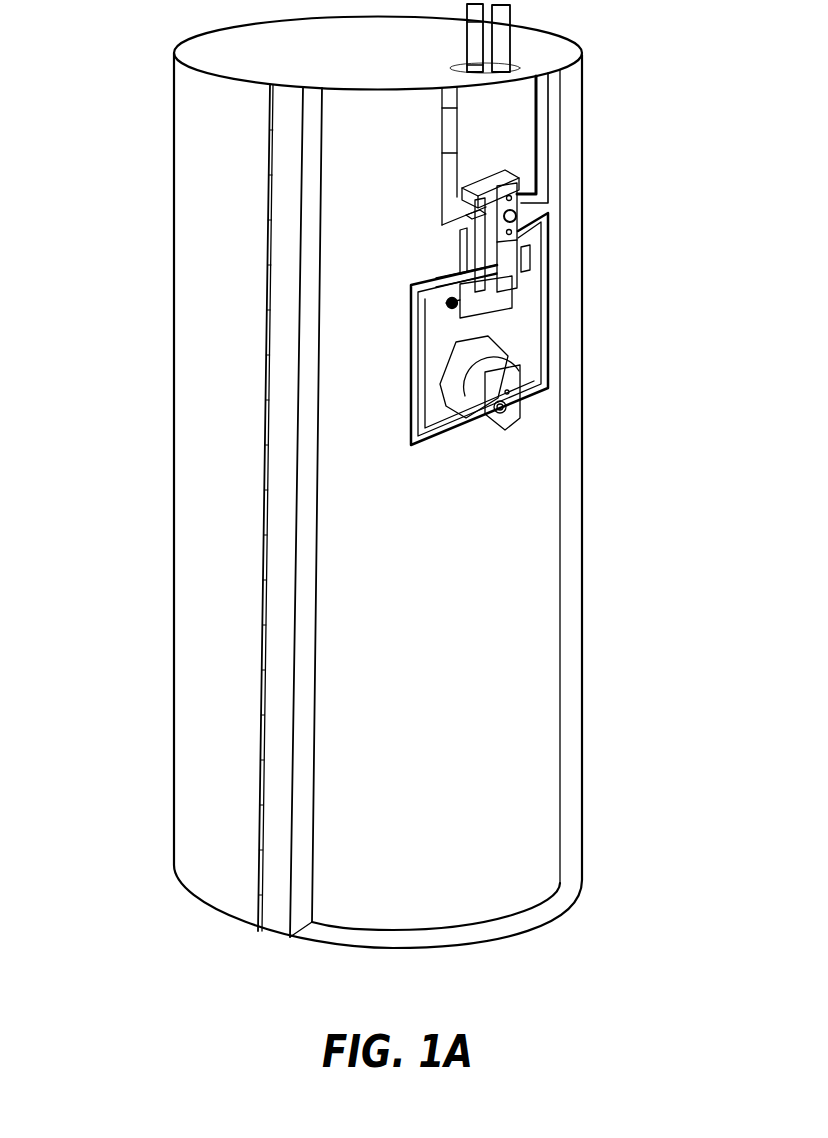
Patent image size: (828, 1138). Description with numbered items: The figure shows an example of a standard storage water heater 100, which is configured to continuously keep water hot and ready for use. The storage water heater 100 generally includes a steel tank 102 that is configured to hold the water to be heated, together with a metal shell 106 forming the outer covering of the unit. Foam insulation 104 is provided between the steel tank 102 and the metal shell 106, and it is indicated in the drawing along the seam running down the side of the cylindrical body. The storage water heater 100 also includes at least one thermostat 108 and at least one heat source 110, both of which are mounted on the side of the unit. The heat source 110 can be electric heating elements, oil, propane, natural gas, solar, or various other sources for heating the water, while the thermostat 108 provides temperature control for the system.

The storage water heater 100 is at (173, 550).
The steel tank 102 is at (352, 278).
The foam insulation 104 is at (285, 212).
The metal shell 106 is at (207, 170).
The thermostat 108 is at (520, 217).
The heat source 110 is at (500, 366).